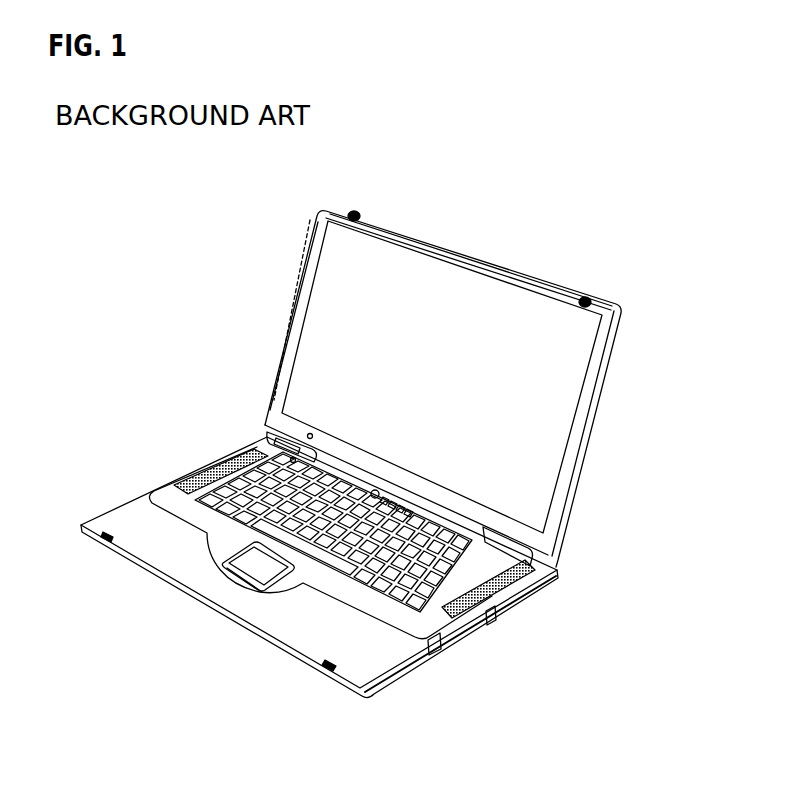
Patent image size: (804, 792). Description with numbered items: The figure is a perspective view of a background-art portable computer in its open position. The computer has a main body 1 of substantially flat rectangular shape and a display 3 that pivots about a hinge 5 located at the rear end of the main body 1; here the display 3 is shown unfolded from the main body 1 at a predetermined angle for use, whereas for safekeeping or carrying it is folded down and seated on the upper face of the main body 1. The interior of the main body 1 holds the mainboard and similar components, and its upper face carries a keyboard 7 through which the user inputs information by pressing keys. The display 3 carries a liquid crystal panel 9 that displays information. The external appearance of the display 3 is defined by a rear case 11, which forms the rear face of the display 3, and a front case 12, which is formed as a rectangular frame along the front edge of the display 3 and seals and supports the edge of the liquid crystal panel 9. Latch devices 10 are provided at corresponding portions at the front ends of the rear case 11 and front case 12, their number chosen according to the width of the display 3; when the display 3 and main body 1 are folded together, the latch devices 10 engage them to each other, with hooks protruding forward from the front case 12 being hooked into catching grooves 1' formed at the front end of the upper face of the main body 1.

The main body 1 is at (319, 566).
The catching grooves 1' is at (201, 632).
The display 3 is at (460, 367).
The hinge 5 is at (266, 424).
The keyboard 7 is at (436, 600).
The liquid crystal panel 9 is at (326, 315).
The latch devices 10 is at (355, 212).
The rear case 11 is at (508, 268).
The front case 12 is at (313, 246).